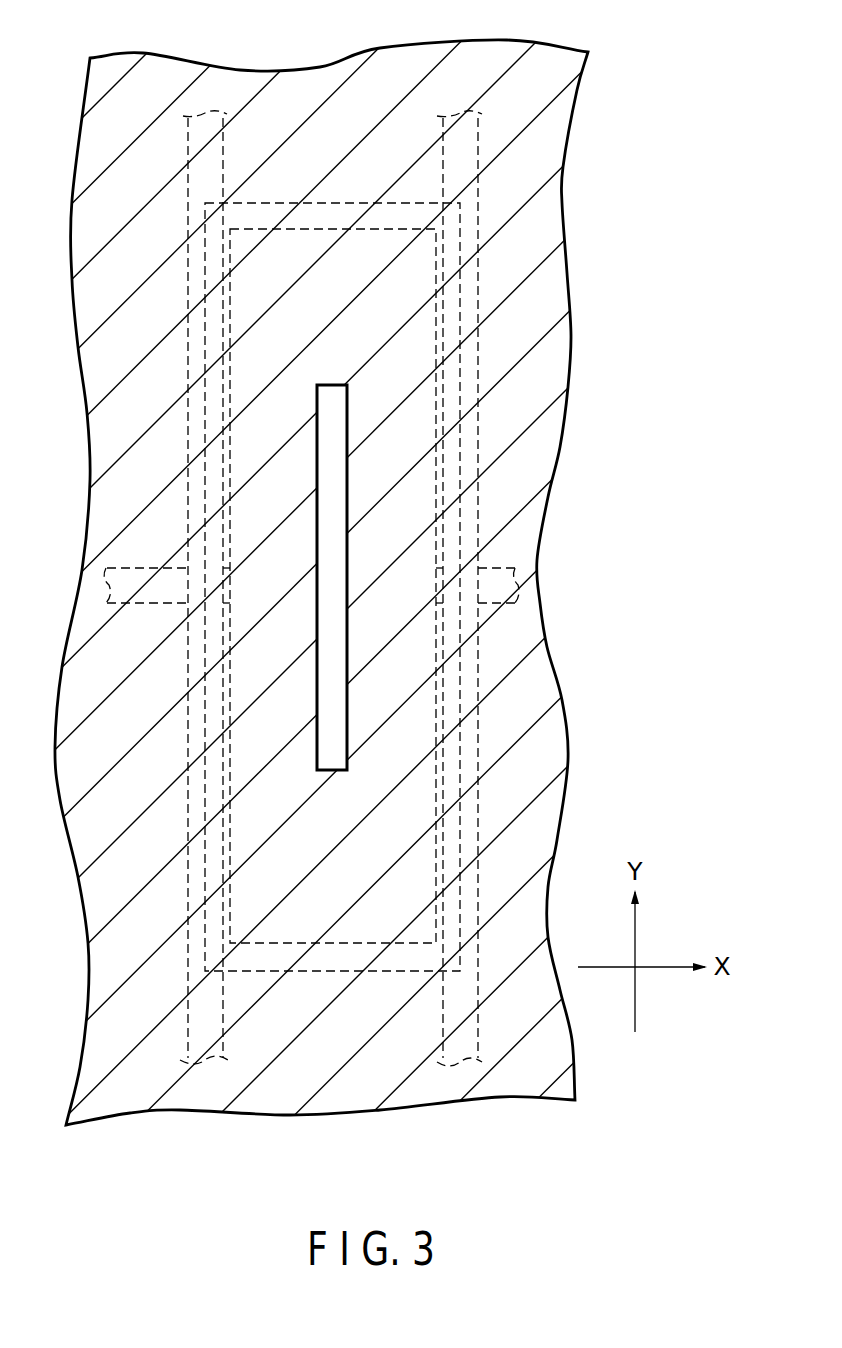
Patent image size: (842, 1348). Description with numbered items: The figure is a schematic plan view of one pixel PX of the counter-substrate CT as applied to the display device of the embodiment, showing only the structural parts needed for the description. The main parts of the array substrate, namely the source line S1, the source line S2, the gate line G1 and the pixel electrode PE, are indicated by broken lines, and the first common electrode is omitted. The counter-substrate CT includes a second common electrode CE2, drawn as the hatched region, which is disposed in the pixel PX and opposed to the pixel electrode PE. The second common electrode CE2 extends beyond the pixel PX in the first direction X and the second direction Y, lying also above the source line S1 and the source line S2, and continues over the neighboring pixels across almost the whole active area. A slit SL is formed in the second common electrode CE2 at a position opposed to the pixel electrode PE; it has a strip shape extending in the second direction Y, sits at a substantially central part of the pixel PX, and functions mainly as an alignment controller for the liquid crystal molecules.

The source line S1 is at (205, 110).
The source line S2 is at (462, 110).
The gate line G1 is at (103, 590).
The pixel PX is at (463, 200).
The pixel electrode PE is at (438, 327).
The slit SL is at (347, 692).
The counter-substrate CT is at (608, 132).
The second common electrode CE2 is at (313, 1117).